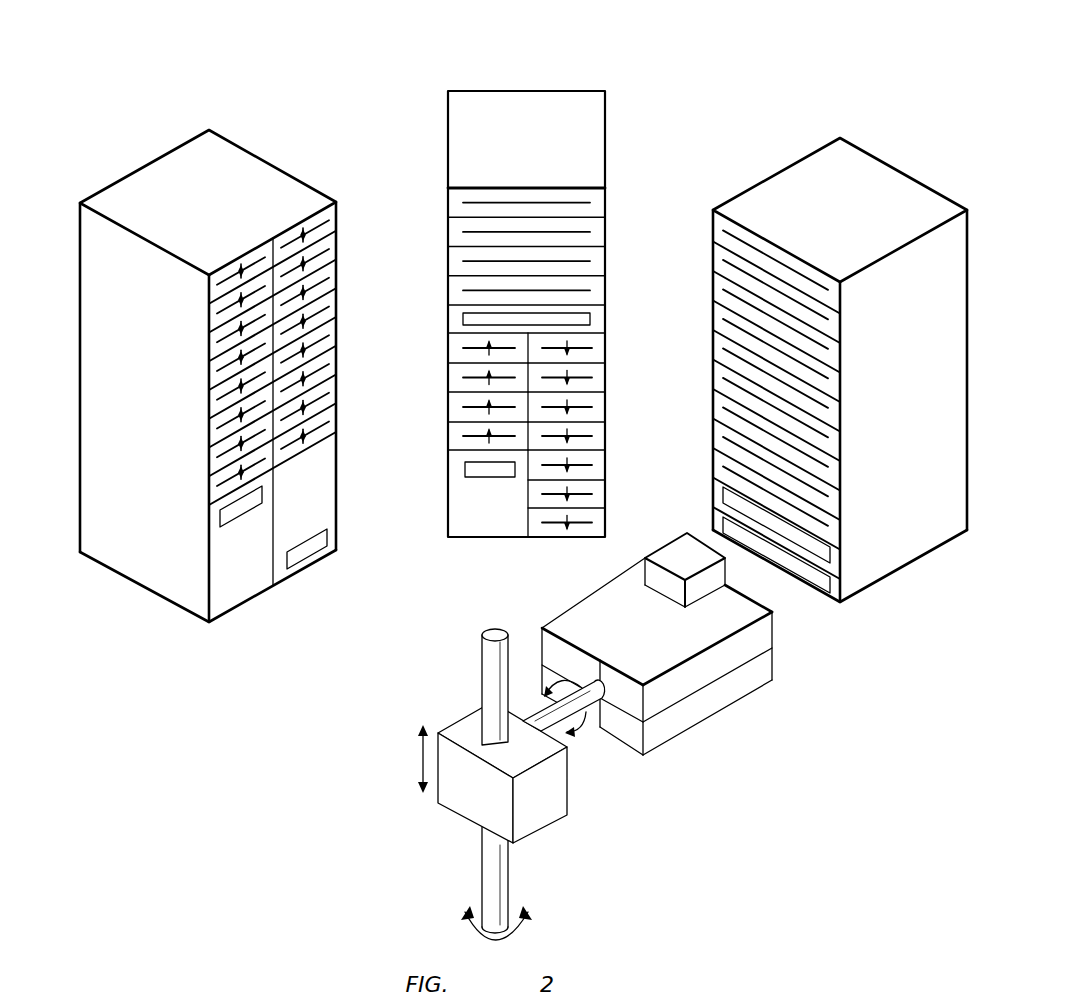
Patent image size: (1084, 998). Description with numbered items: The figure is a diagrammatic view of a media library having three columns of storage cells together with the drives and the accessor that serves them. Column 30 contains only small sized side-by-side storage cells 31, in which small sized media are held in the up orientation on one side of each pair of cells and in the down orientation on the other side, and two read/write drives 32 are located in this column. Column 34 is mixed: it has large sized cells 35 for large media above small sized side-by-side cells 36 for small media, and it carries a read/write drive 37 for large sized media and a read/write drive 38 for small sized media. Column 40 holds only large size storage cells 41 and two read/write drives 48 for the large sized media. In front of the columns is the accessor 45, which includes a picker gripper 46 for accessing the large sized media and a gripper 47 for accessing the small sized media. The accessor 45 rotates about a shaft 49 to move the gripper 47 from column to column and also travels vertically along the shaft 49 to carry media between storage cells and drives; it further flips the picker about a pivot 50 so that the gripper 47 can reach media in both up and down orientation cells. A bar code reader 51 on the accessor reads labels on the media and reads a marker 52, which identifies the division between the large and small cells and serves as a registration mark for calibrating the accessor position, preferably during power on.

The column 30 is at (208, 358).
The small sized side-by-side storage cells 31 is at (280, 240).
The read/write drives 32 is at (282, 573).
The column 34 is at (526, 295).
The large sized cells 35 is at (600, 227).
The small sized side-by-side cells 36 is at (456, 410).
The read/write drive 37 is at (593, 318).
The read/write drive 38 is at (480, 530).
The column 40 is at (812, 368).
The large size storage cells 41 is at (717, 232).
The accessor 45 is at (543, 818).
The picker gripper 46 is at (715, 705).
The gripper 47 is at (577, 612).
The read/write drives 48 is at (818, 547).
The shaft 49 is at (488, 853).
The pivot 50 is at (600, 692).
The bar code reader 51 is at (680, 540).
The marker 52 is at (605, 335).